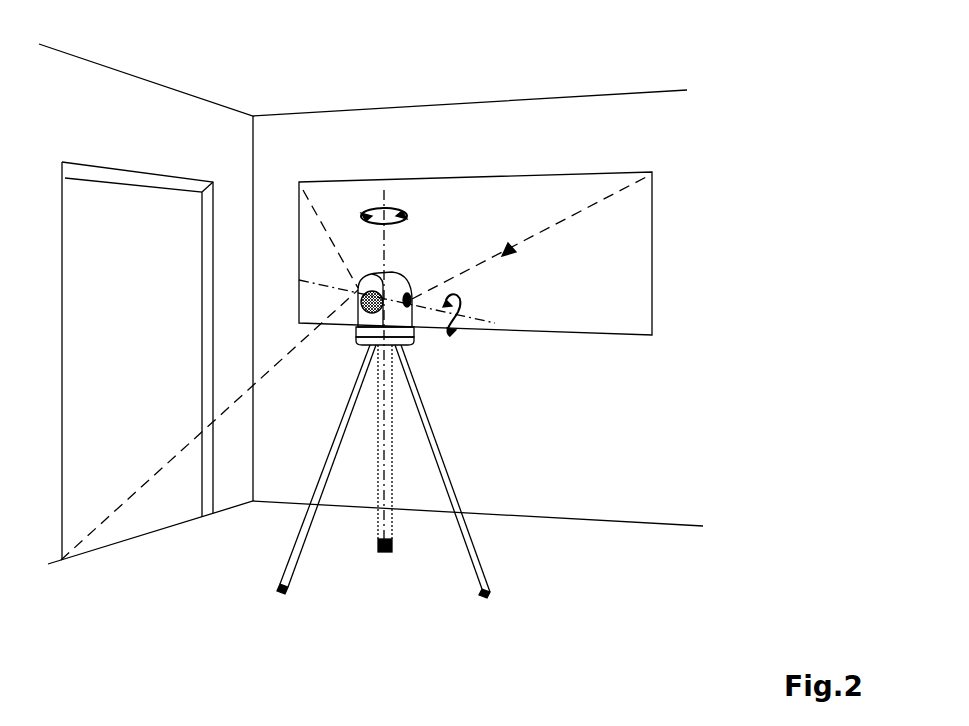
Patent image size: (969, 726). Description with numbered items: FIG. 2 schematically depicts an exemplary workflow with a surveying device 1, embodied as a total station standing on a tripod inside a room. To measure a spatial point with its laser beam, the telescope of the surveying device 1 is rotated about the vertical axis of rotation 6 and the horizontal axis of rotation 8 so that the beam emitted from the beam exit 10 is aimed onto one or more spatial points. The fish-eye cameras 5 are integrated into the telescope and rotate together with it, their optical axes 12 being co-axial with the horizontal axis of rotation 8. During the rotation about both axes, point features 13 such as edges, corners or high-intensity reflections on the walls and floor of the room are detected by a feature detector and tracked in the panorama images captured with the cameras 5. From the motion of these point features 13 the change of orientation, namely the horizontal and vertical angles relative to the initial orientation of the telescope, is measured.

The surveying device 1 is at (504, 254).
The fish-eye cameras 5 is at (495, 302).
The vertical axis of rotation 6 is at (473, 202).
The horizontal axis of rotation 8 is at (586, 253).
The optical axes 12 is at (570, 318).
The beam exit 10 is at (447, 333).
The point features 13 is at (392, 180).